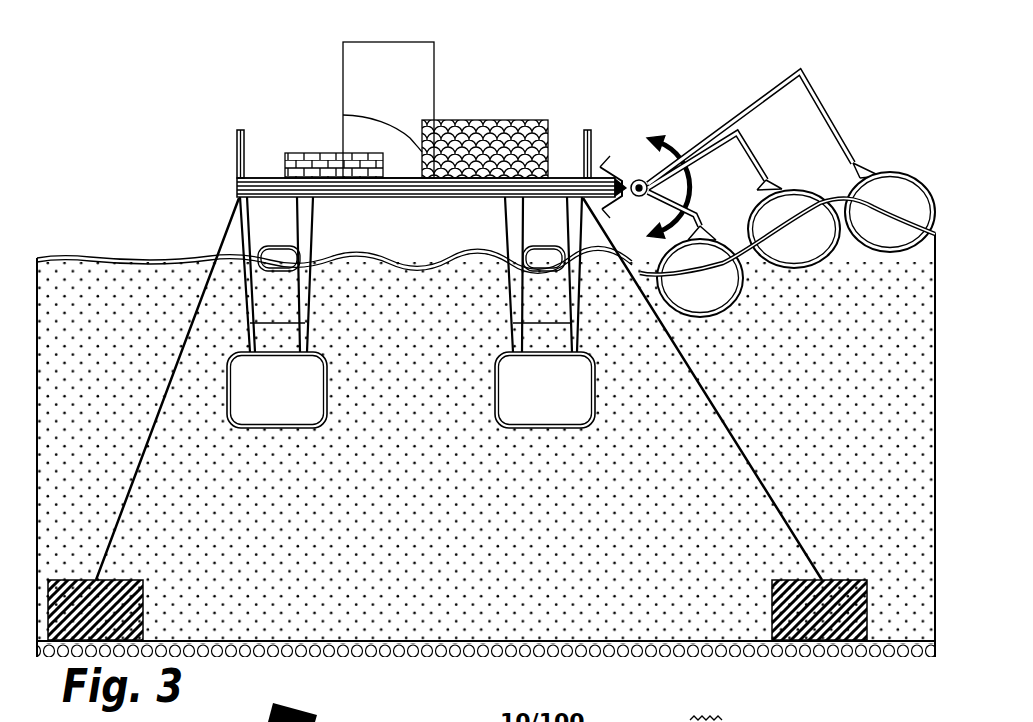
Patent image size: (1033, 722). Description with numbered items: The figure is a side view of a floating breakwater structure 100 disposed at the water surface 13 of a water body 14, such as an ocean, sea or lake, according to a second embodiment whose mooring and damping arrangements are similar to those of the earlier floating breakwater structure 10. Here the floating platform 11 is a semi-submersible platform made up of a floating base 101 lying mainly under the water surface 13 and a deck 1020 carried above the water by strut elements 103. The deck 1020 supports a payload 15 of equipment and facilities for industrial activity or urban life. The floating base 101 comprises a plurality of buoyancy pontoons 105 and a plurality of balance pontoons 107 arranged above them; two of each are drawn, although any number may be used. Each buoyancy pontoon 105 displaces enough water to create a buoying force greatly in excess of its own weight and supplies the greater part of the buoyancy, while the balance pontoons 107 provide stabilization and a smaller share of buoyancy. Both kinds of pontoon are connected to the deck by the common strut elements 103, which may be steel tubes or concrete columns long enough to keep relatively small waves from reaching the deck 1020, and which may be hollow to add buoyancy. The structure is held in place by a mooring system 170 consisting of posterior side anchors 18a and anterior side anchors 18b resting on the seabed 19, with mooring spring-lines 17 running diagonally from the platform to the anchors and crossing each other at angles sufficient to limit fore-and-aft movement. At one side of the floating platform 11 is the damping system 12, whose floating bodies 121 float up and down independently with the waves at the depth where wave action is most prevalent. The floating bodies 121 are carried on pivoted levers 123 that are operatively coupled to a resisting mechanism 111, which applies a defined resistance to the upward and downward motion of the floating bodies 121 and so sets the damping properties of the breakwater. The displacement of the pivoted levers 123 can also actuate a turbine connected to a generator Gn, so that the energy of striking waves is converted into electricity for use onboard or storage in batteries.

The floating breakwater structure 100 is at (200, 64).
The floating breakwater structure 10 is at (496, 61).
The floating platform 11 is at (220, 187).
The deck 1020 is at (235, 180).
The water surface 13 is at (38, 261).
The water body 14 is at (660, 461).
The payload 15 is at (304, 153).
The mooring spring-lines 17 is at (146, 441).
The posterior side anchors 18a is at (144, 614).
The anterior side anchors 18b is at (772, 608).
The seabed 19 is at (465, 648).
The floating base 101 is at (196, 240).
The strut elements 103 is at (250, 323).
The buoyancy pontoons 105 is at (328, 418).
The balance pontoons 107 is at (540, 247).
The resisting mechanism 111 is at (618, 176).
The generator Gn is at (637, 180).
The damping system 12 is at (878, 84).
The floating bodies 121 is at (887, 253).
The pivoted levers 123 is at (700, 195).
The mooring system 170 is at (659, 526).